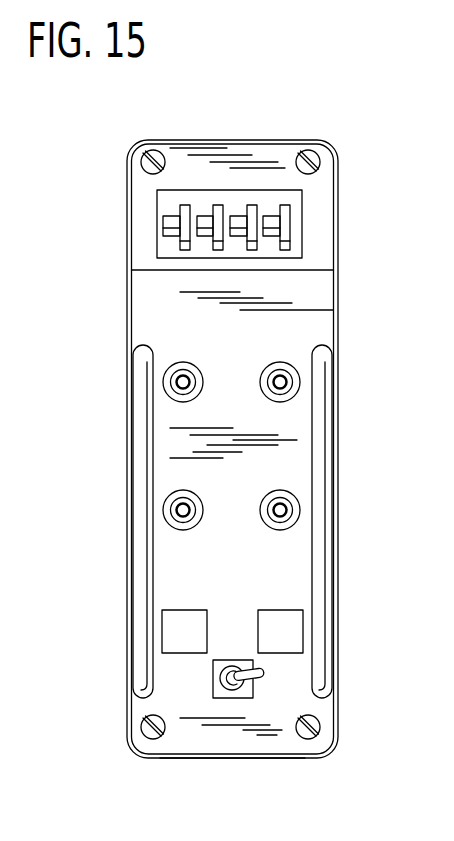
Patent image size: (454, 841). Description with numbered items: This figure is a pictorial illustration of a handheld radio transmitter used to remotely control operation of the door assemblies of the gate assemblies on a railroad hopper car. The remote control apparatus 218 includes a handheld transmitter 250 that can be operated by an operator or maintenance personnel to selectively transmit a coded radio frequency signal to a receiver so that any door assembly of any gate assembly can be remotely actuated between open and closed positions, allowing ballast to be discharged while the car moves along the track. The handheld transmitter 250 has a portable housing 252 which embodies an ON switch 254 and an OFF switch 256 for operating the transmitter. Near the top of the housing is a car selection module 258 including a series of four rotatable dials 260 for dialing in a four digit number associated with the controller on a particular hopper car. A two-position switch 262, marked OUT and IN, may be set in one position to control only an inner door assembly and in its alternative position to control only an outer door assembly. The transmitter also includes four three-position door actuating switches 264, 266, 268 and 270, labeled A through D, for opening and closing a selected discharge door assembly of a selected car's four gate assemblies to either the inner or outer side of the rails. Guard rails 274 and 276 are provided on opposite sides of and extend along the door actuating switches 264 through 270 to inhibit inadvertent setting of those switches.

The remote control apparatus 218 is at (96, 147).
The handheld transmitter 250 is at (120, 327).
The portable housing 252 is at (185, 747).
The ON switch 254 is at (173, 632).
The OFF switch 256 is at (290, 635).
The car selection module 258 is at (316, 233).
The rotatable dials 260 is at (202, 221).
The two-position switch 262 is at (231, 708).
The door actuating switch 264 is at (212, 378).
The door actuating switch 266 is at (252, 380).
The door actuating switch 268 is at (210, 507).
The door actuating switch 270 is at (252, 508).
The guard rail 274 is at (141, 527).
The guard rail 276 is at (318, 535).